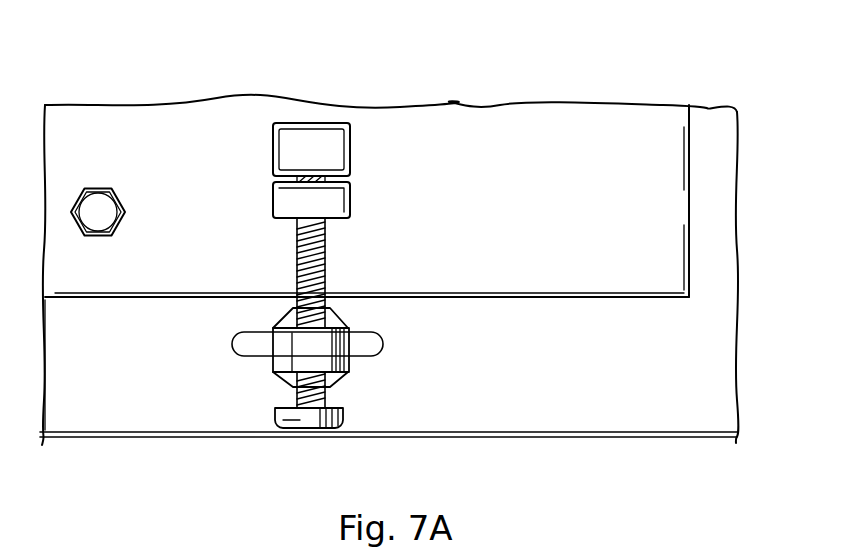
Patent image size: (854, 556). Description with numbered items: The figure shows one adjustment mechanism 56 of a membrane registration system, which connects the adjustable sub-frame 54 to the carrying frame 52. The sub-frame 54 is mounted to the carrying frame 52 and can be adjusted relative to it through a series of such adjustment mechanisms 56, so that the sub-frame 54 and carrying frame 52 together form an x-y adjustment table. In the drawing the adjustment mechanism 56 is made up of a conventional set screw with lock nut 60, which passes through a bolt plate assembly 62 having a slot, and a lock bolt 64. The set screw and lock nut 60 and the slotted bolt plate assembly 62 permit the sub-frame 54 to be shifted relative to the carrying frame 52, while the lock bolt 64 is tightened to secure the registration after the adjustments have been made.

The carrying frame 52 is at (552, 377).
The adjustable sub-frame 54 is at (552, 207).
The adjustment mechanism 56 is at (389, 241).
The set screw with lock nut 60 is at (326, 377).
The bolt plate assembly 62 is at (235, 340).
The lock bolt 64 is at (140, 374).